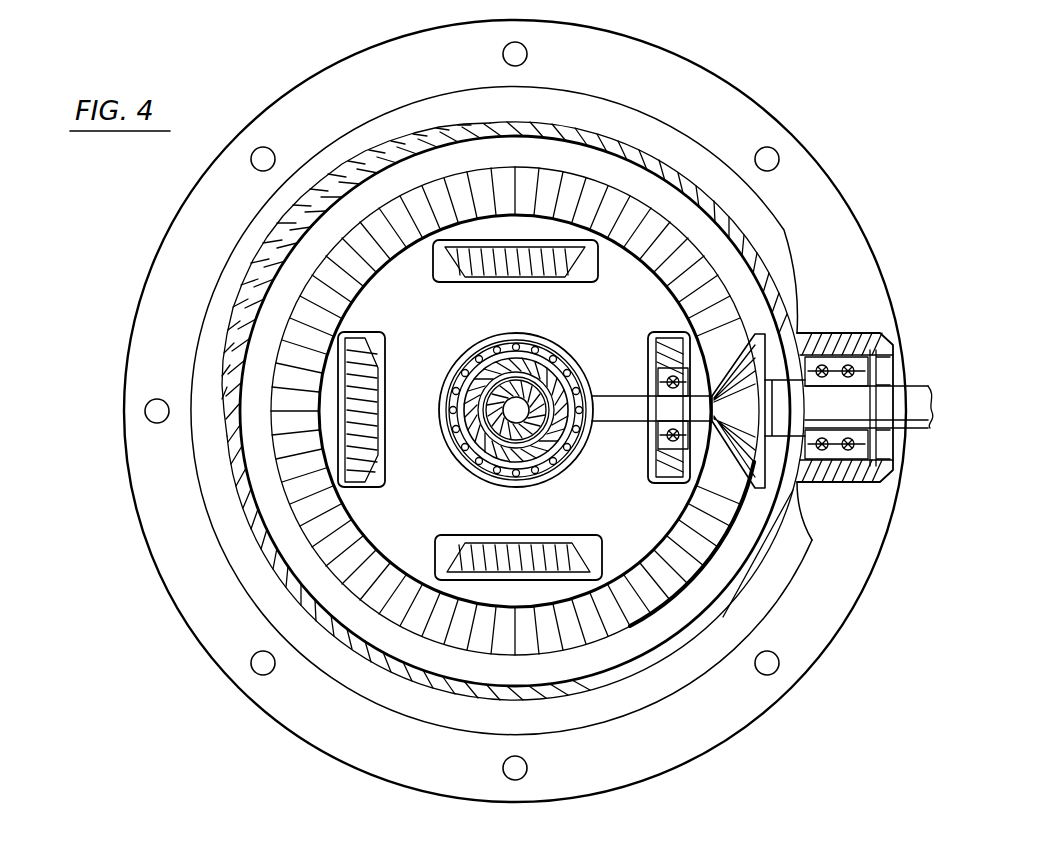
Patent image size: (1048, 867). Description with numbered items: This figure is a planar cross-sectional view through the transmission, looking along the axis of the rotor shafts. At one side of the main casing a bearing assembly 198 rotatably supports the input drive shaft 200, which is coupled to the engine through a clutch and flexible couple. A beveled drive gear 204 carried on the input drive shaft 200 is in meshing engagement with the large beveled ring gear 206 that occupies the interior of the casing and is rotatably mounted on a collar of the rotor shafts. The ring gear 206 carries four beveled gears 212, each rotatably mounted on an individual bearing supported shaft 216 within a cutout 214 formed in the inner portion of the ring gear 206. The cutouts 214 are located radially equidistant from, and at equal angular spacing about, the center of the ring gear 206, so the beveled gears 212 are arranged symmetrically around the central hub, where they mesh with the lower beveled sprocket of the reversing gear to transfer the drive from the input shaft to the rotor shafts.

The bearing assembly 198 is at (827, 337).
The input drive shaft 200 is at (908, 398).
The beveled drive gear 204 is at (763, 333).
The beveled ring gear 206 is at (650, 290).
The beveled gears 212 is at (527, 258).
The cutouts 214 is at (442, 252).
The bearing supported shafts 216 is at (682, 410).